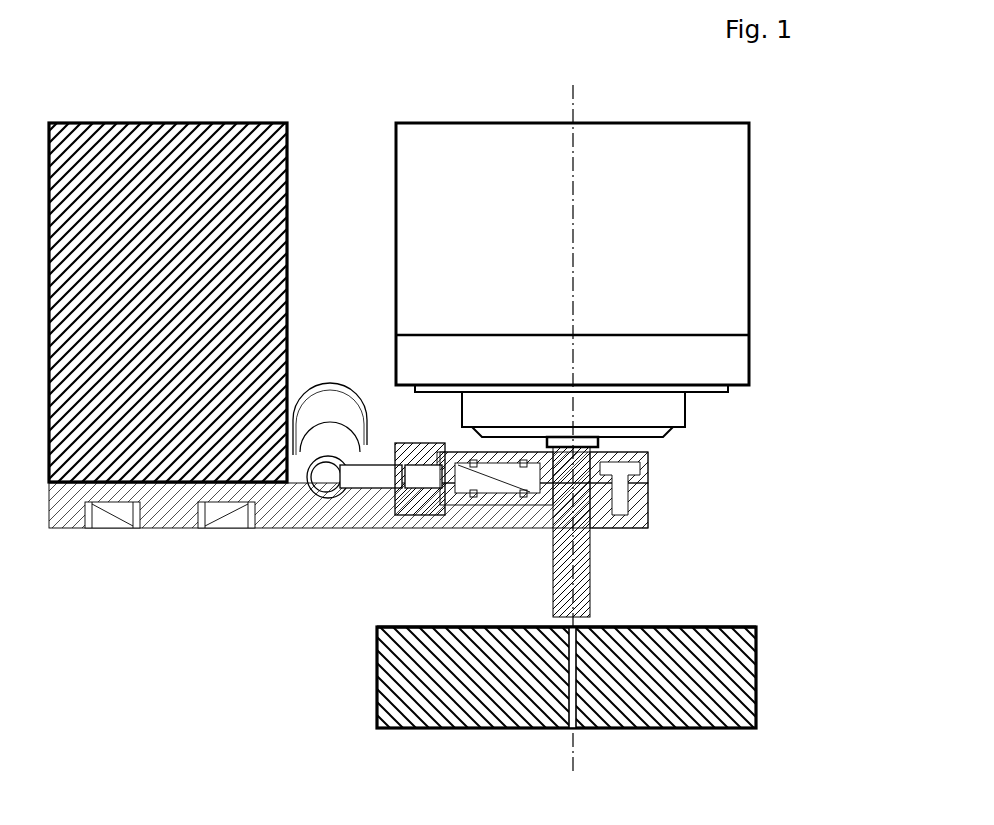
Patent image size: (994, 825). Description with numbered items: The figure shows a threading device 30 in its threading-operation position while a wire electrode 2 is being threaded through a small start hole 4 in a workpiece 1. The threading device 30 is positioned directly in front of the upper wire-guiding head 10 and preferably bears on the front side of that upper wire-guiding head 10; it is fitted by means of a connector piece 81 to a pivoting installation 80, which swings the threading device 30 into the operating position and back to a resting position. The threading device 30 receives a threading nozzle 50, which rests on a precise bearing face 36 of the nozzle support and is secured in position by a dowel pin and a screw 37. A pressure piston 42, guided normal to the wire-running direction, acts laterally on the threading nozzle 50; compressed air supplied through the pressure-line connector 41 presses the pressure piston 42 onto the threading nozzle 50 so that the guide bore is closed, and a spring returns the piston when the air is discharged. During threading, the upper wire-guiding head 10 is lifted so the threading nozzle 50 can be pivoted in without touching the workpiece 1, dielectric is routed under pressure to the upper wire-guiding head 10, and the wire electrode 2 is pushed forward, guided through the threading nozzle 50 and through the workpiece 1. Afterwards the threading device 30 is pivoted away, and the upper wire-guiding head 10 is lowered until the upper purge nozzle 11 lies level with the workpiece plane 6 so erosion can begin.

The workpiece 1 is at (702, 660).
The wire electrode 2 is at (573, 243).
The start hole 4 is at (575, 730).
The workpiece plane 6 is at (693, 627).
The upper wire-guiding head 10 is at (710, 165).
The upper purge nozzle 11 is at (585, 441).
The threading device 30 is at (458, 583).
The bearing face 36 is at (603, 503).
The screw 37 is at (612, 483).
The pressure-line connector 41 is at (332, 396).
The pressure piston 42 is at (460, 487).
The threading nozzle 50 is at (586, 575).
The pivoting installation 80 is at (62, 440).
The connector piece 81 is at (160, 516).